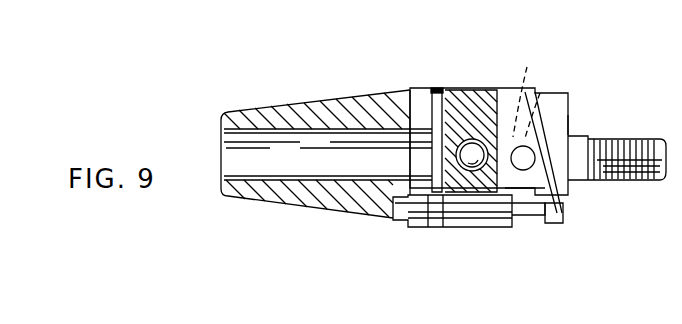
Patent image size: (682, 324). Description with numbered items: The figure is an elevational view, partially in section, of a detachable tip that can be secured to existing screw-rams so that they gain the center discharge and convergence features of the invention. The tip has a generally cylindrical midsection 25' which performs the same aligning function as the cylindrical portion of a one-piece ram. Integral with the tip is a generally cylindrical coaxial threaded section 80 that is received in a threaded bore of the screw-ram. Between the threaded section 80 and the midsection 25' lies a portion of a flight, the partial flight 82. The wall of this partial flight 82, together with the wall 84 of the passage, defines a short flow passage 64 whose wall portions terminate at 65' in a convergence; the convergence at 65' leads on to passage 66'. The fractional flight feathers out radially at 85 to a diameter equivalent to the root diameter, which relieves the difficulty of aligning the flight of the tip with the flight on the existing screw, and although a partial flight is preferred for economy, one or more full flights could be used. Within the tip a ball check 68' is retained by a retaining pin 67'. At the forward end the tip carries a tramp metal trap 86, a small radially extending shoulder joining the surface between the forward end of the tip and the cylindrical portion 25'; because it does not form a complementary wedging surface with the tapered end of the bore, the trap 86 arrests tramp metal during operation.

The tramp metal trap 86 is at (410, 90).
The retaining pin 67' is at (438, 114).
The generally cylindrical midsection 25' is at (489, 112).
The ball check 68' is at (484, 122).
The passage 66' is at (536, 112).
The convergence 65' is at (560, 154).
The feathered-out portion of fractional flight 85 is at (567, 123).
The coaxial threaded section 80 is at (644, 137).
The wall of the passage 84 is at (512, 226).
The short flow passage 64 is at (535, 215).
The partial flight 82 is at (557, 225).